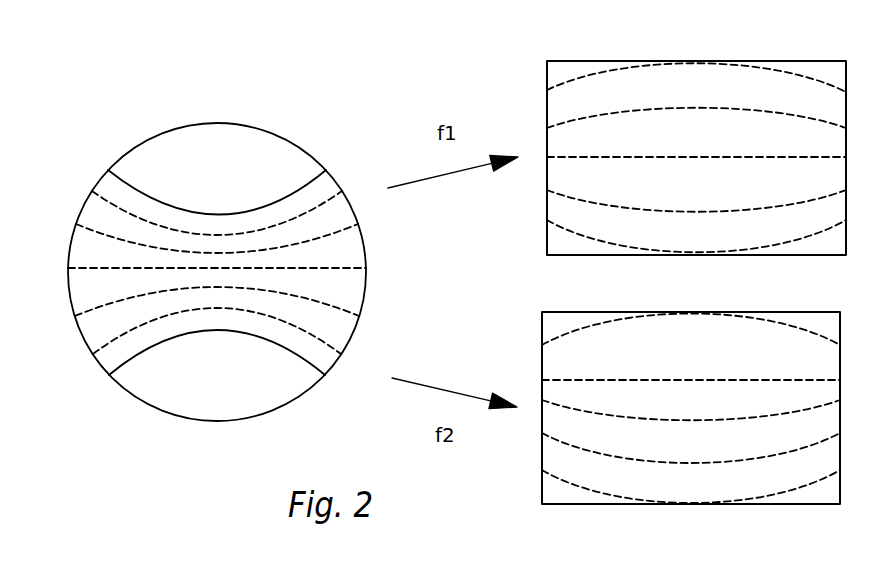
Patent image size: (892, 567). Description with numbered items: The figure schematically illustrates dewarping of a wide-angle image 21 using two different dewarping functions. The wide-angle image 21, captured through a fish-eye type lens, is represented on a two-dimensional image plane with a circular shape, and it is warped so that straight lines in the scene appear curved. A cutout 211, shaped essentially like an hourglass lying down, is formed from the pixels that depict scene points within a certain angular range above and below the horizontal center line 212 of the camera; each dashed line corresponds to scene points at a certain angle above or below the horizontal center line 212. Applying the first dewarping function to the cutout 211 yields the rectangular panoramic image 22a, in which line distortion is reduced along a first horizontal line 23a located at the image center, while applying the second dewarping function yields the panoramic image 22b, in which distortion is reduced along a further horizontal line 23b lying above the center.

The wide-angle image 21 is at (222, 122).
The cutout 211 is at (163, 205).
The horizontal center line 212 is at (92, 270).
The panoramic image 22a is at (740, 62).
The first horizontal line 23a is at (748, 157).
The panoramic image 22b is at (633, 505).
The further horizontal line 23b is at (708, 380).